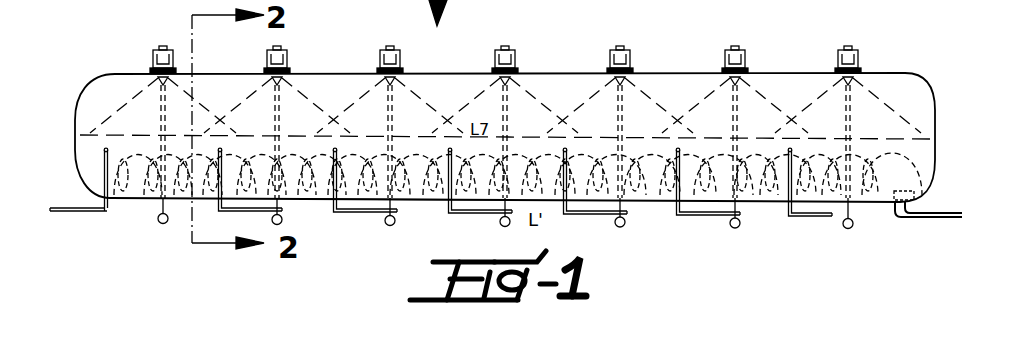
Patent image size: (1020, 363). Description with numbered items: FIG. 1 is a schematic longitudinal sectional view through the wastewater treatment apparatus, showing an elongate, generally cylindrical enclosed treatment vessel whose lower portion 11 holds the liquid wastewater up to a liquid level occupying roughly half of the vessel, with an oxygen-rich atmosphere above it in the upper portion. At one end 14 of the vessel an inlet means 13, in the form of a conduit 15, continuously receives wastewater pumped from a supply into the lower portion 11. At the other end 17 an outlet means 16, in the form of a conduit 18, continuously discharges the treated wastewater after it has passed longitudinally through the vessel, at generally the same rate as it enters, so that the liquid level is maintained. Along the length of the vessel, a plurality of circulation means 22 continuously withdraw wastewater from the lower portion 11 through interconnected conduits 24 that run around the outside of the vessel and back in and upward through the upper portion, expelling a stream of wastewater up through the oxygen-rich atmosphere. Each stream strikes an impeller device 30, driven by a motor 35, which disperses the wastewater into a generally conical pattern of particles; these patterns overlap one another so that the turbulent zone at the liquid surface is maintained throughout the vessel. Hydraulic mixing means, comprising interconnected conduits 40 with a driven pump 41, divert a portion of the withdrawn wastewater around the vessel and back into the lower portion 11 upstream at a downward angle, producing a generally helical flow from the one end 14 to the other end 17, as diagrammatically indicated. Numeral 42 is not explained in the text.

The lower portion 11 is at (452, 88).
The inlet means 13 is at (104, 172).
The one end 14 is at (75, 130).
The conduit 15 is at (112, 212).
The outlet means 16 is at (913, 196).
The other end 17 is at (960, 112).
The conduit 18 is at (948, 232).
The circulation means 22 is at (346, 226).
The interconnected conduits 24 is at (524, 100).
The impeller device 30 is at (378, 82).
The motor 35 is at (156, 50).
The interconnected conduits 40 is at (592, 215).
The driven pump 41 is at (626, 224).
The tank bottom 42 is at (420, 203).